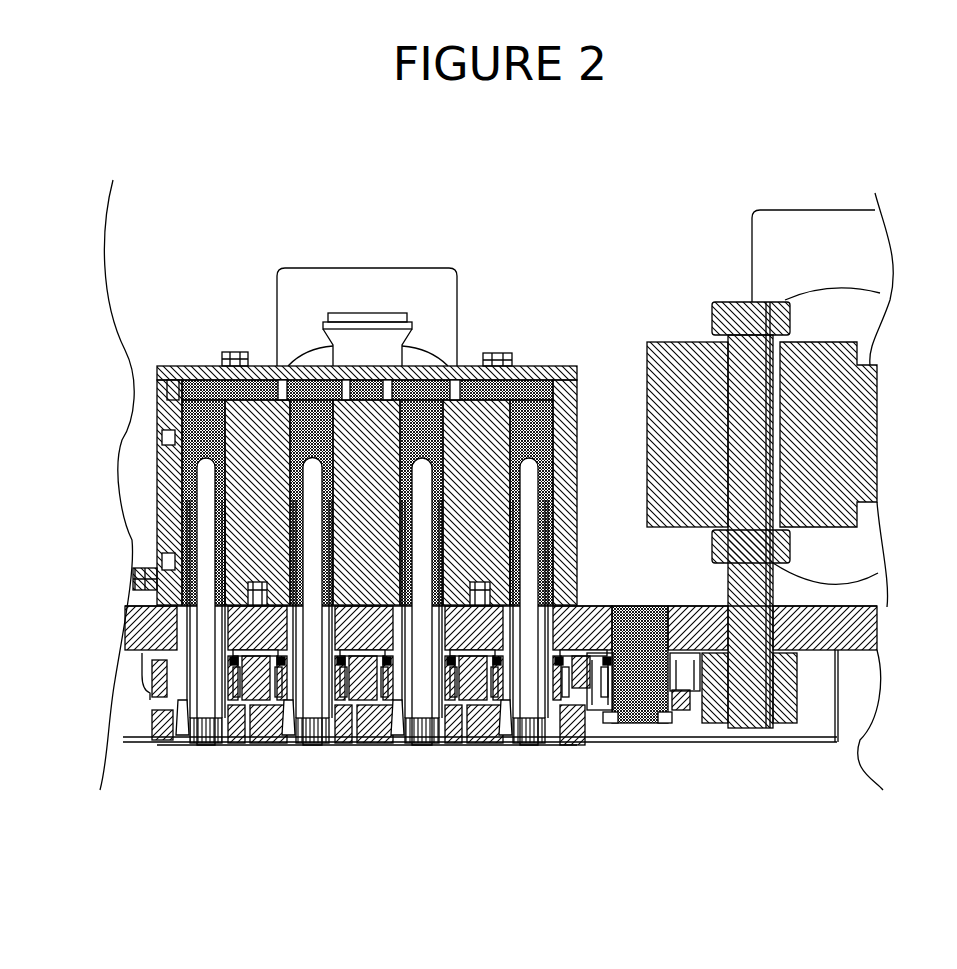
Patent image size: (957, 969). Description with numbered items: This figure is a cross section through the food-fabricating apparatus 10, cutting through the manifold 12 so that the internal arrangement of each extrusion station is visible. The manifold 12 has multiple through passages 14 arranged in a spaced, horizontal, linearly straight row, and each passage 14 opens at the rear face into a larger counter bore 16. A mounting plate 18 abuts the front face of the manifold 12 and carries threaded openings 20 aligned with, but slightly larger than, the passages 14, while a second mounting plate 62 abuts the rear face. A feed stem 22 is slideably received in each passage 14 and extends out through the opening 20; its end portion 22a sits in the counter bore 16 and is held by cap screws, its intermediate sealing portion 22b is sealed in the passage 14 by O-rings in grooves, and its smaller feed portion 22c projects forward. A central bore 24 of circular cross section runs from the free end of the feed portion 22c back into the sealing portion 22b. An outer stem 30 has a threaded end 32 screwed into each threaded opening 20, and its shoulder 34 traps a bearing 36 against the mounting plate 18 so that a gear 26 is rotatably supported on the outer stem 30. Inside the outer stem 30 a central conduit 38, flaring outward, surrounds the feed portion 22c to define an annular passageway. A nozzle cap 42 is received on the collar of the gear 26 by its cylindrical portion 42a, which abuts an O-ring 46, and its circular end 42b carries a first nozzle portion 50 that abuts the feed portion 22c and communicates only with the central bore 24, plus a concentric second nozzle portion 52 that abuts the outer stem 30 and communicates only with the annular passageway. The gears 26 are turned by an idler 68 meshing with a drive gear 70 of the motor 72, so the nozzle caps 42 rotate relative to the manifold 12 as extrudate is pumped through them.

The apparatus 10 is at (277, 200).
The manifold 12 is at (577, 410).
The through passage 14 is at (555, 563).
The counter bore 16 is at (243, 390).
The mounting plate 18 is at (850, 640).
The threaded opening 20 is at (125, 638).
The feed stem 22 is at (532, 380).
The end portion 22a is at (497, 380).
The sealing portion 22b is at (545, 440).
The feed portion 22c is at (327, 742).
The central bore 24 is at (530, 693).
The gear 26 is at (147, 673).
The outer stem 30 is at (179, 740).
The threaded end 32 is at (140, 604).
The shoulder 34 is at (573, 712).
The bearing 36 is at (250, 690).
The central conduit 38 is at (442, 742).
The nozzle cap 42 is at (500, 743).
The cylindrical portion 42a is at (153, 740).
The circular end 42b is at (233, 738).
The O-ring 46 is at (483, 690).
The first nozzle portion 50 is at (532, 743).
The second nozzle portion 52 is at (393, 742).
The mounting plate 62 is at (163, 367).
The idler 68 is at (685, 693).
The drive gear 70 is at (793, 723).
The motor 72 is at (867, 290).